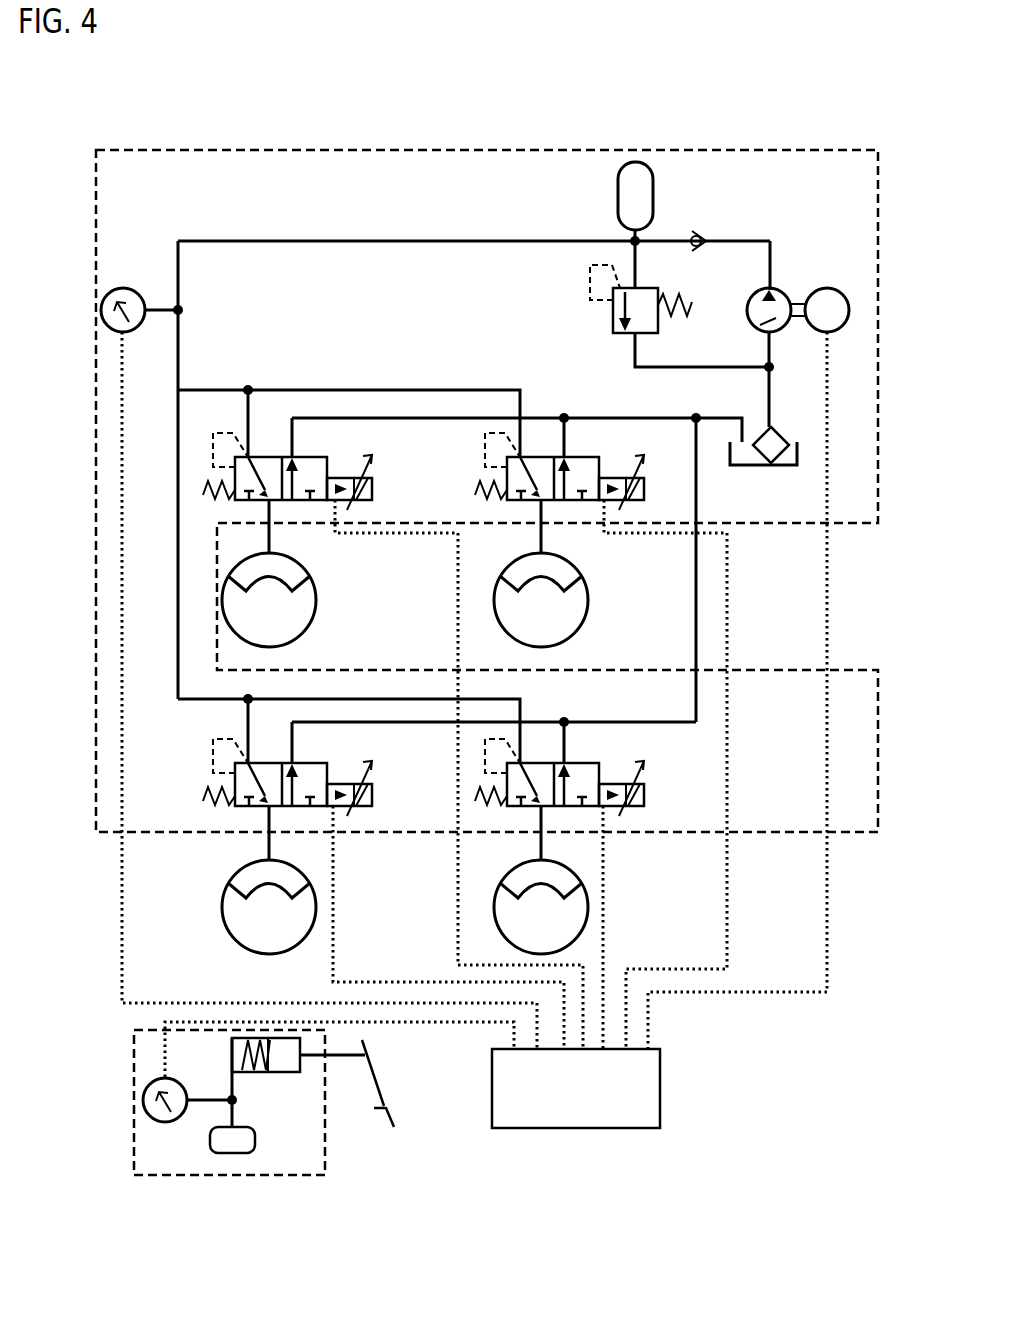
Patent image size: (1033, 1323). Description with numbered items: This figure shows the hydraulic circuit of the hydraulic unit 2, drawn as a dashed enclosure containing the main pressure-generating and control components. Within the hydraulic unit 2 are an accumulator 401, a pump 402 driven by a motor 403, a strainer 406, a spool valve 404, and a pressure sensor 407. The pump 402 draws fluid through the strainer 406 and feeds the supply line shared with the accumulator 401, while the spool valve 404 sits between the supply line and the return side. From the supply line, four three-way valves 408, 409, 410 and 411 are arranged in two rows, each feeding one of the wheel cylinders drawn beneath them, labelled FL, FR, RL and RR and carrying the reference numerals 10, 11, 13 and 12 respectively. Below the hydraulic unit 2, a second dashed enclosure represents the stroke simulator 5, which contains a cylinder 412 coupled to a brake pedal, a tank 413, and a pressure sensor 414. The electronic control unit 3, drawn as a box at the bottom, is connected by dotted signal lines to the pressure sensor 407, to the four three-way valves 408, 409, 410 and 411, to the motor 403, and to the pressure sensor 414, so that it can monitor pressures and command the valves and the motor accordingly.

The hydraulic unit 2 is at (588, 148).
The electronic control unit 3 is at (607, 1120).
The stroke simulator 5 is at (325, 1148).
The front left wheel cylinder 10 is at (570, 582).
The front right wheel cylinder 11 is at (298, 582).
The rear right wheel cylinder 12 is at (243, 880).
The rear left wheel cylinder 13 is at (528, 882).
The accumulator 401 is at (640, 205).
The pump 402 is at (757, 325).
The motor 403 is at (828, 292).
The spool valve 404 is at (612, 310).
The strainer 406 is at (777, 442).
The pressure sensor 407 is at (125, 300).
The three-way valve 408 is at (590, 460).
The three-way valve 409 is at (318, 460).
The three-way valve 410 is at (590, 766).
The three-way valve 411 is at (318, 764).
The cylinder 412 is at (270, 1060).
The tank 413 is at (245, 1140).
The pressure sensor 414 is at (152, 1095).